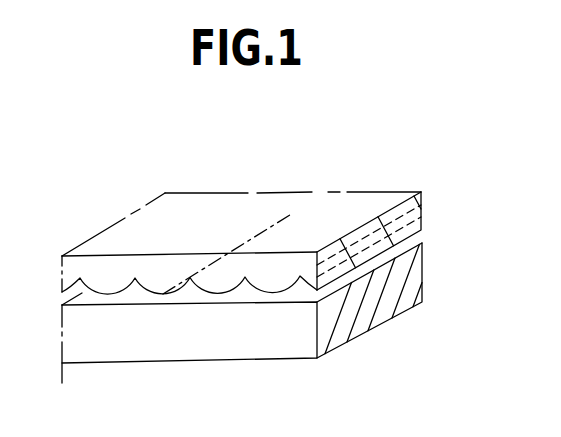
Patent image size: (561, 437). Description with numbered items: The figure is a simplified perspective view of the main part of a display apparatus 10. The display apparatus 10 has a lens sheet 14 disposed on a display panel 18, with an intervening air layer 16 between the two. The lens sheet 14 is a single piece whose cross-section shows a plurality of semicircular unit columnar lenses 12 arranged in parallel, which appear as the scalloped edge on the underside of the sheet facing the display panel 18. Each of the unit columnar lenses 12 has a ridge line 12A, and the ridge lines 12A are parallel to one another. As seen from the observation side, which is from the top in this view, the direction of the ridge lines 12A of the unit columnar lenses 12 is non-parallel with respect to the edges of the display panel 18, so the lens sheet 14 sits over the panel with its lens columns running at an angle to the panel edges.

The display apparatus 10 is at (96, 205).
The unit columnar lenses 12 is at (108, 297).
The ridge lines 12A is at (254, 235).
The lens sheet 14 is at (372, 191).
The air layer 16 is at (423, 262).
The display panel 18 is at (368, 322).